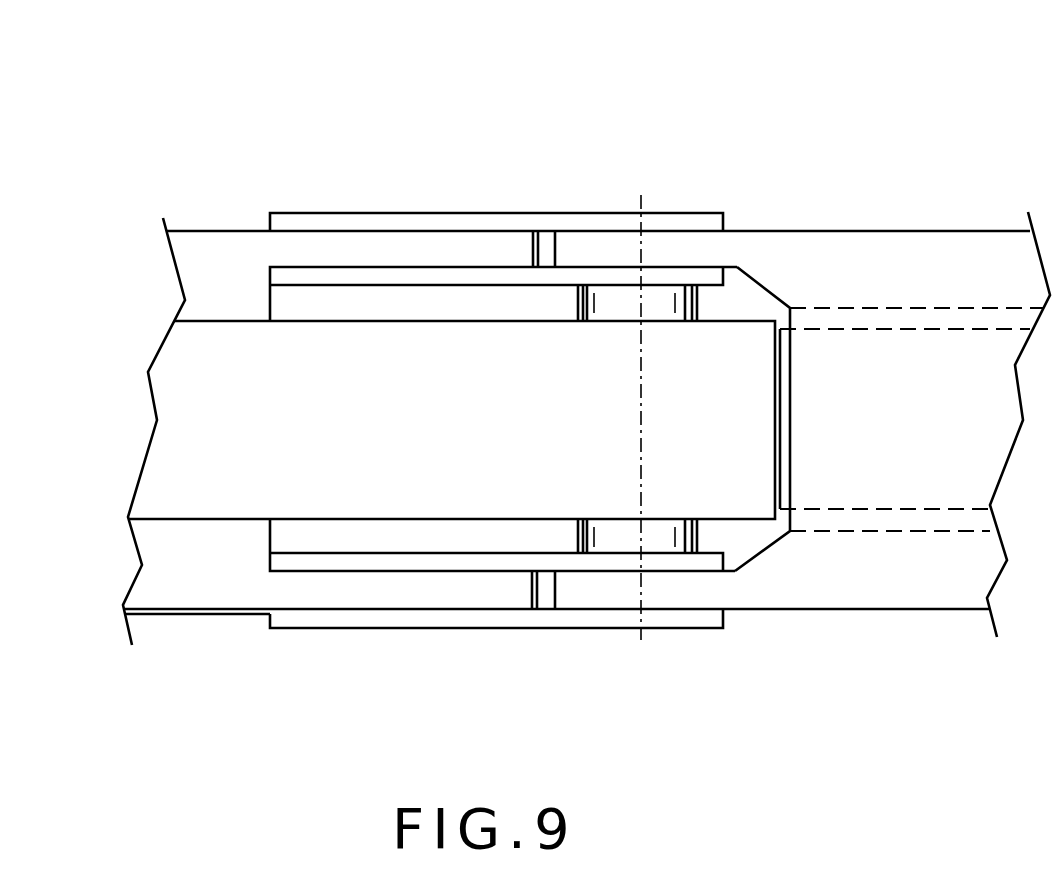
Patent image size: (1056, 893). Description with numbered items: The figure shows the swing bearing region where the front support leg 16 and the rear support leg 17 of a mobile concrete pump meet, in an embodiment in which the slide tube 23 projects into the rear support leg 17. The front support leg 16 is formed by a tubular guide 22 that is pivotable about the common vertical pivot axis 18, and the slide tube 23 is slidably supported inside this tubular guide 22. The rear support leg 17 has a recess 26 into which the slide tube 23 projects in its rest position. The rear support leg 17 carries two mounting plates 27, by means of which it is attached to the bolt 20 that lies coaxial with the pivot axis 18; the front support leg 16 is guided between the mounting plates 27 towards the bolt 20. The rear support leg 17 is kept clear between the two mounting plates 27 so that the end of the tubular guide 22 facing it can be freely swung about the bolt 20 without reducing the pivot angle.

The front support leg 16 is at (323, 423).
The rear support leg 17 is at (913, 553).
The pivot axis 18 is at (642, 420).
The bolt 20 is at (641, 283).
The tubular guide 22 is at (449, 423).
The slide tube 23 is at (782, 452).
The recess 26 is at (850, 307).
The mounting plates 27 is at (680, 245).